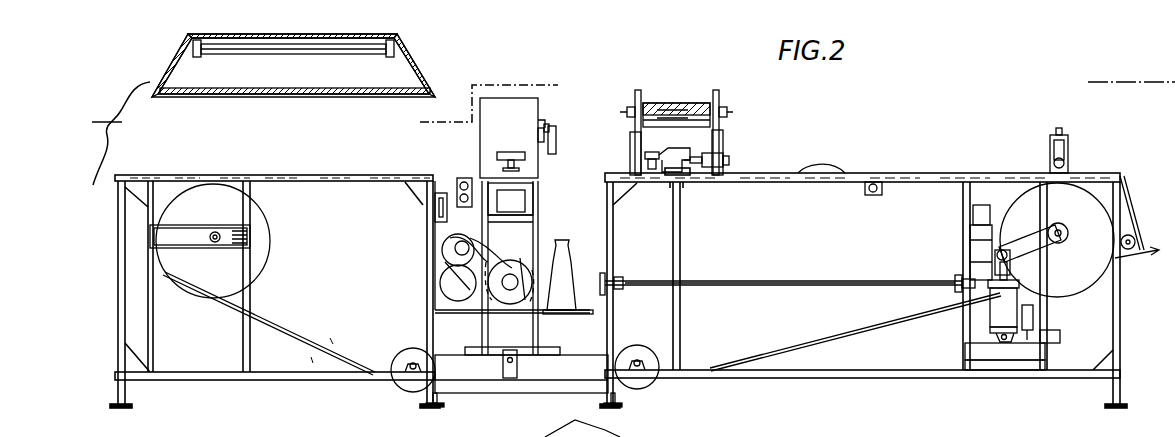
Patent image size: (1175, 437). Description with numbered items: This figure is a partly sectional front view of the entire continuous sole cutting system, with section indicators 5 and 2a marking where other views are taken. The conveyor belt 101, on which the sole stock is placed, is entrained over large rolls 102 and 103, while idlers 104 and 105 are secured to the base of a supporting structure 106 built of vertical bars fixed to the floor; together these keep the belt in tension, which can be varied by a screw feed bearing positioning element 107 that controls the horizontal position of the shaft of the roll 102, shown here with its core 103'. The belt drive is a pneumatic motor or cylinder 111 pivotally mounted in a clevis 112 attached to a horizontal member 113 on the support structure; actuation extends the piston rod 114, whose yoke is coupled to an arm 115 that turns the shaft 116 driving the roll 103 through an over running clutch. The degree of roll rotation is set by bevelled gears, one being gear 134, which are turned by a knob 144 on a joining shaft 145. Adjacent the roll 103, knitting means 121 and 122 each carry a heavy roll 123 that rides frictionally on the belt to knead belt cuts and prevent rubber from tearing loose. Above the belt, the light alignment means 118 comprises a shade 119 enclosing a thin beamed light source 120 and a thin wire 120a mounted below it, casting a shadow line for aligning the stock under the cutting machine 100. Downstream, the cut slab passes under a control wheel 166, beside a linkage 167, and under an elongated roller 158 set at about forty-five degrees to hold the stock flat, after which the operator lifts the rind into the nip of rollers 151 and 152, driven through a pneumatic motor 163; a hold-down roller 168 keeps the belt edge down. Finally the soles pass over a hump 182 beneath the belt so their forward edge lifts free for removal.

The section line 5 is at (107, 113).
The cutting machine 100 is at (530, 112).
The conveyor belt 101 is at (294, 330).
The roll 102 is at (274, 241).
The roll 103 is at (1057, 246).
The roll core knob 103' is at (202, 220).
The idler 104 is at (405, 388).
The idler 105 is at (645, 388).
The supporting structure 106 is at (205, 382).
The screw feed bearing positioning element 107 is at (205, 247).
The pneumatic motor or cylinder 111 is at (990, 312).
The clevis 112 is at (1000, 340).
The horizontal member 113 is at (1038, 362).
The piston rod 114 is at (1012, 256).
The arm 115 is at (1046, 234).
The shaft 116 is at (1066, 238).
The light alignment means 118 is at (405, 65).
The shade 119 is at (248, 34).
The light source 120 is at (325, 44).
The thin wire or opaque member 120a is at (238, 94).
The knitting means 121 is at (1068, 153).
The knitting means 122 is at (1135, 232).
The heavy roll 123 is at (1132, 210).
The bevelled gear 134 is at (963, 290).
The knob 144 is at (608, 272).
The joining shaft 145 is at (775, 282).
The roller 151 is at (702, 103).
The roller 152 is at (720, 142).
The elongated roller 158 is at (686, 176).
The pneumatic motor 163 is at (726, 160).
The control wheel 166 is at (635, 165).
The linkage 167 is at (642, 152).
The hold-down roller 168 is at (657, 130).
The hump 182 is at (838, 170).
The section line 2a is at (322, 340).